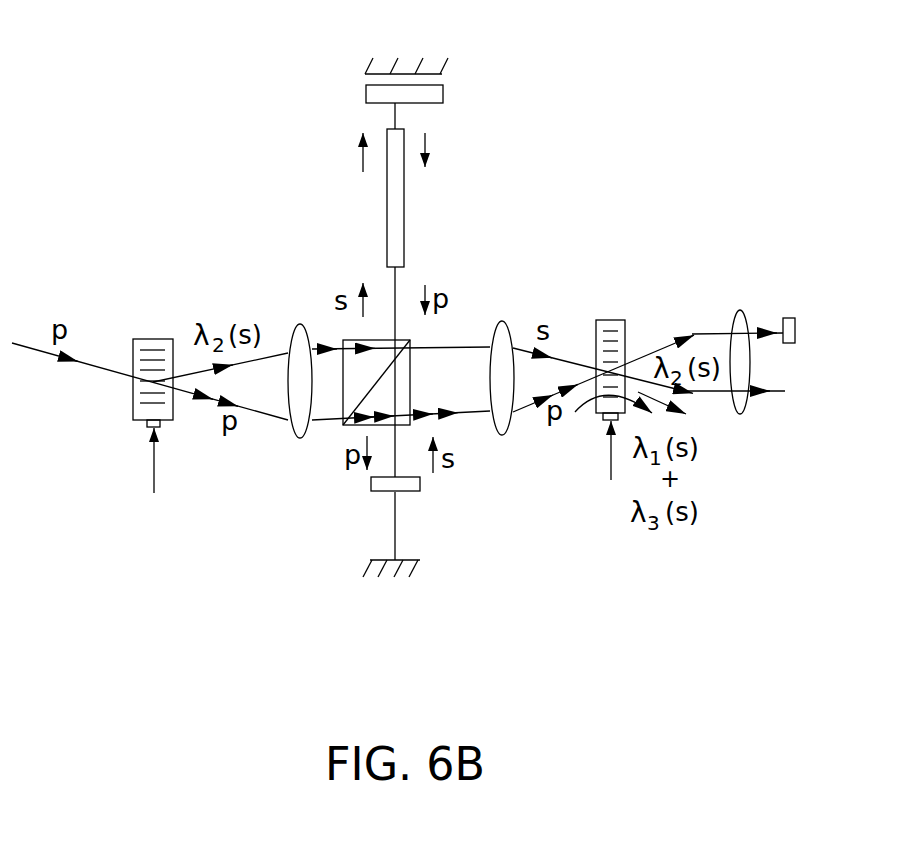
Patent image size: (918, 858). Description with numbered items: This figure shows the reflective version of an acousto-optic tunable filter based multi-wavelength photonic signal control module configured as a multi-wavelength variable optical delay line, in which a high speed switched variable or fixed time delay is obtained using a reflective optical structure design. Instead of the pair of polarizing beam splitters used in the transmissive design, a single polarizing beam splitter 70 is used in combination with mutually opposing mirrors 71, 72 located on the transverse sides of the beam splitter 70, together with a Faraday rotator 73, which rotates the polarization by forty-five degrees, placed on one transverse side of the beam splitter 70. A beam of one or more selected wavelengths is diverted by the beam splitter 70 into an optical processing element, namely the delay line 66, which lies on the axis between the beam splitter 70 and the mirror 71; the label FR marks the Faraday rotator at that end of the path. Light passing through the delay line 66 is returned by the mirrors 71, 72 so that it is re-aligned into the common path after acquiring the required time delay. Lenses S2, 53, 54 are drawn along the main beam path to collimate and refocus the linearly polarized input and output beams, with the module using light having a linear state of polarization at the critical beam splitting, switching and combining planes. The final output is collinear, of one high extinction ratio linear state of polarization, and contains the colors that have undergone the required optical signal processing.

The mirror 71 is at (436, 64).
The Faraday rotator FR is at (365, 94).
The delay line 66 is at (408, 200).
The polarizing beam splitter 70 is at (328, 443).
The lens S2 is at (299, 326).
The lens 53 is at (502, 434).
The Faraday 45° rotator 73 is at (420, 484).
The mirror 72 is at (388, 578).
The lens 54 is at (741, 318).